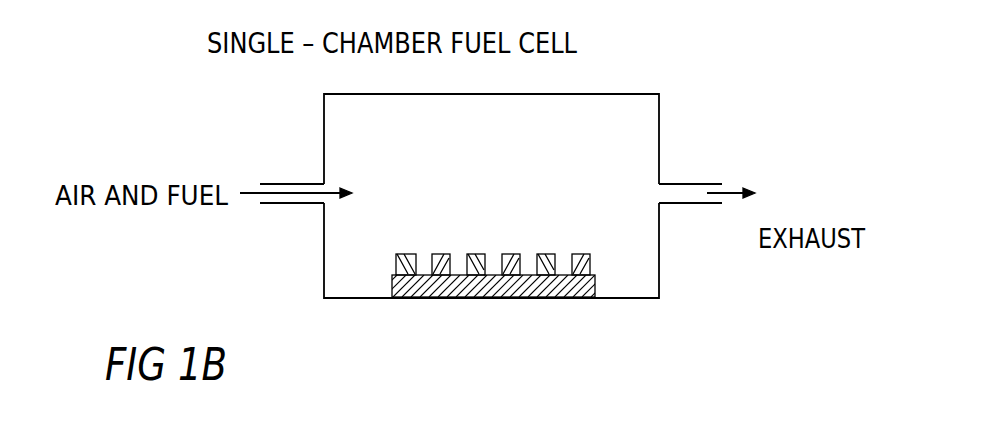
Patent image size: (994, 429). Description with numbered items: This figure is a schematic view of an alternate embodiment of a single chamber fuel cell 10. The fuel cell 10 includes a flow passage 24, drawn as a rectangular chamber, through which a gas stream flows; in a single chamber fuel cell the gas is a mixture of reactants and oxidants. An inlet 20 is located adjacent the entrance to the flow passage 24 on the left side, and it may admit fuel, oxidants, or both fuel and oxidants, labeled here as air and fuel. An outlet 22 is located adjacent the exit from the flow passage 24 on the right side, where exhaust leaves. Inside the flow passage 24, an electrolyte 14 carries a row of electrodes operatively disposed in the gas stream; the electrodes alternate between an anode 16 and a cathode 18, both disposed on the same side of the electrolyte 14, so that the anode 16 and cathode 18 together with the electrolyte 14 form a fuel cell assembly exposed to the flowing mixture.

The fuel cell 10 is at (523, 162).
The electrolyte 14 is at (548, 298).
The anode 16 is at (443, 254).
The cathode 18 is at (400, 253).
The inlet 20 is at (270, 207).
The outlet 22 is at (702, 184).
The flow passage 24 is at (512, 133).